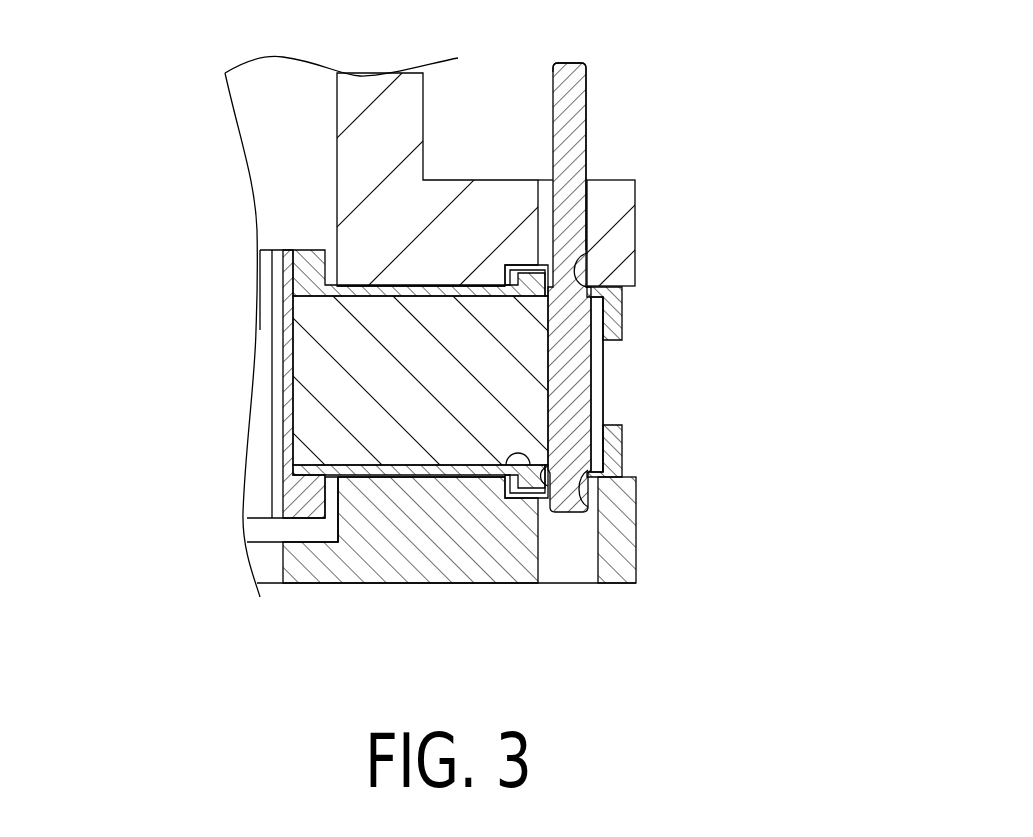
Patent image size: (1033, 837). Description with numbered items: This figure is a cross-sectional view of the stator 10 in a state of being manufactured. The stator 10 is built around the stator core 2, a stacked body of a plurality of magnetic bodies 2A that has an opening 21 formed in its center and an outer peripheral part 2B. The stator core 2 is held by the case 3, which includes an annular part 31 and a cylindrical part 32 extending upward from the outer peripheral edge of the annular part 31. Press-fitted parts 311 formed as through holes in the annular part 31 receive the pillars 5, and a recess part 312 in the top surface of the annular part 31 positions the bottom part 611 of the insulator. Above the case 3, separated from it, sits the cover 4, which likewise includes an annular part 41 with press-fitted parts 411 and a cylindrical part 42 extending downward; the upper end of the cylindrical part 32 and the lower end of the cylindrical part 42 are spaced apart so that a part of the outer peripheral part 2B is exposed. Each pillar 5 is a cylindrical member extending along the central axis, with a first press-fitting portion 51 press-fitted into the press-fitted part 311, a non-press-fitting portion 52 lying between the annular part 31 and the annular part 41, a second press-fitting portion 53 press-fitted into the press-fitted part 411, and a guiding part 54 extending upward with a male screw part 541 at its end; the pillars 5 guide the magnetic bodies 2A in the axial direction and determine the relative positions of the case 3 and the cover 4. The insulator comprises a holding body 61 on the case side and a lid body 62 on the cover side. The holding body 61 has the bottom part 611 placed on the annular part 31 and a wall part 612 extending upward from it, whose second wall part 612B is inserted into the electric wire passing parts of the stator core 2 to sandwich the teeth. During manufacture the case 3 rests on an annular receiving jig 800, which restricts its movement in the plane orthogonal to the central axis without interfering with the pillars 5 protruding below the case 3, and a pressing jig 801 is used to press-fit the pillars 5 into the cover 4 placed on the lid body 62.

The stator 10 is at (656, 343).
The stator core 2 is at (456, 405).
The opening 21 is at (357, 430).
The magnetic bodies 2A is at (292, 425).
The outer peripheral part 2B is at (603, 360).
The case 3 is at (638, 539).
The annular part 31 is at (633, 575).
The press-fitted parts 311 is at (585, 478).
The recess part 312 is at (513, 477).
The cylindrical part 32 is at (623, 432).
The cover 4 is at (631, 241).
The annular part 41 is at (595, 292).
The press-fitted parts 411 is at (580, 275).
The cylindrical part 42 is at (623, 320).
The pillar 5 is at (603, 339).
The first press-fitting portion 51 is at (542, 500).
The non-press-fitting portion 52 is at (668, 384).
The second press-fitting portion 53 is at (527, 267).
The guiding part 54 is at (588, 125).
The male screw part 541 is at (553, 80).
The holding body 61 is at (457, 473).
The bottom part 611 is at (392, 473).
The wall part 612 is at (290, 310).
The second wall part 612B is at (290, 387).
The lid body 62 is at (443, 283).
The receiving jig 800 is at (397, 568).
The pressing jig 801 is at (375, 93).